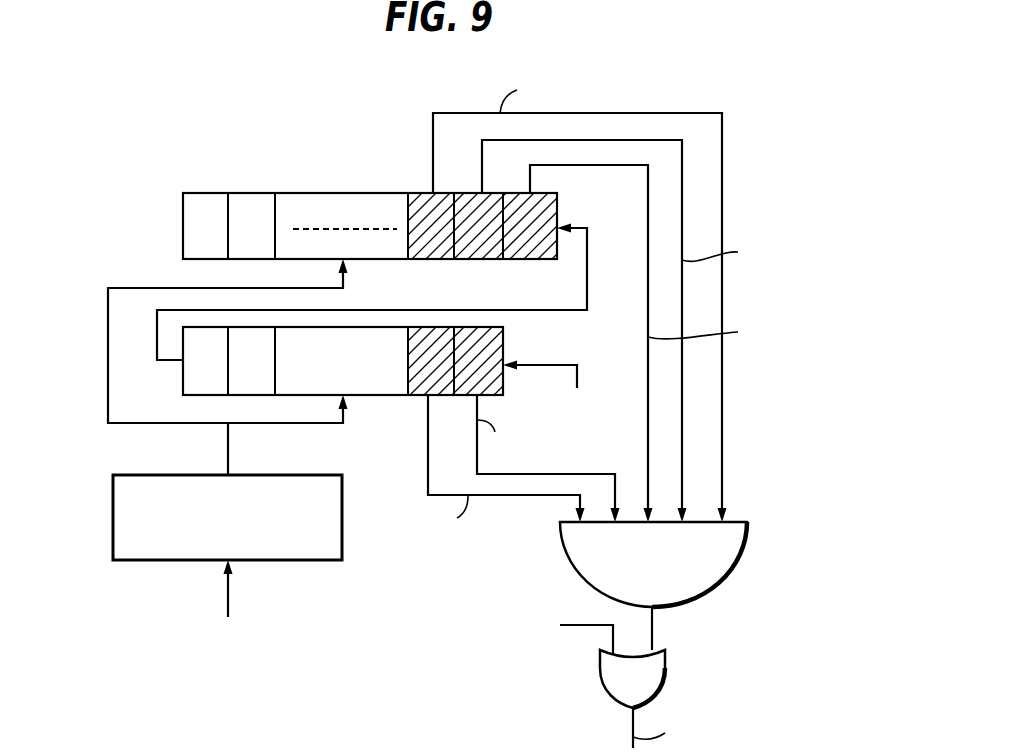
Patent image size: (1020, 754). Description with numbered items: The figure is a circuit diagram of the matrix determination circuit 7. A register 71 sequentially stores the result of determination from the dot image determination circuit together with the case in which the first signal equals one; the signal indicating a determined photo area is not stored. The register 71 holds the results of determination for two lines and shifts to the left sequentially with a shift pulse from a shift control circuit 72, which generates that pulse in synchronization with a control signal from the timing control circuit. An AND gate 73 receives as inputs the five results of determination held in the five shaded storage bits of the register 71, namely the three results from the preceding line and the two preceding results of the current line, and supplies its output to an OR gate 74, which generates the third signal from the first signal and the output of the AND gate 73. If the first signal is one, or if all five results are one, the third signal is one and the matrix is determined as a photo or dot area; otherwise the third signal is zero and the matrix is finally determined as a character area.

The matrix determination circuit 7 is at (375, 153).
The register 71 is at (183, 338).
The shift control circuit 72 is at (292, 475).
The AND gate 73 is at (748, 520).
The OR gate 74 is at (665, 657).